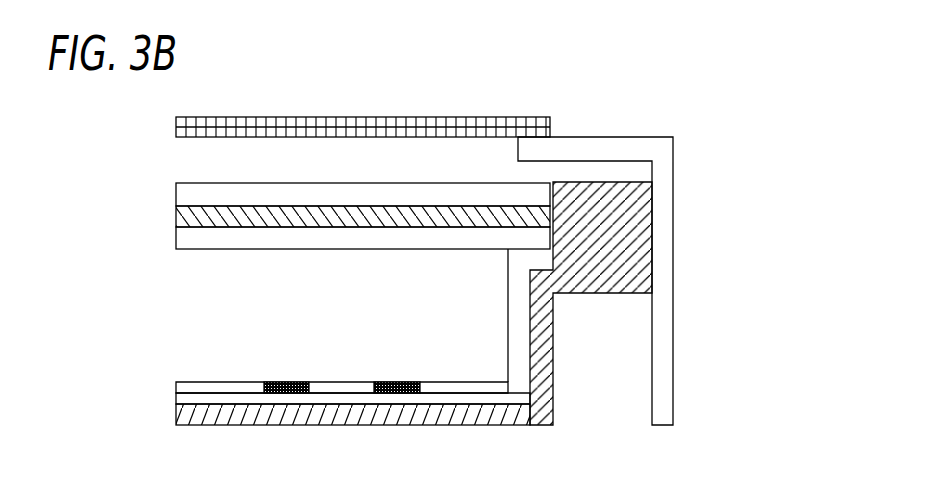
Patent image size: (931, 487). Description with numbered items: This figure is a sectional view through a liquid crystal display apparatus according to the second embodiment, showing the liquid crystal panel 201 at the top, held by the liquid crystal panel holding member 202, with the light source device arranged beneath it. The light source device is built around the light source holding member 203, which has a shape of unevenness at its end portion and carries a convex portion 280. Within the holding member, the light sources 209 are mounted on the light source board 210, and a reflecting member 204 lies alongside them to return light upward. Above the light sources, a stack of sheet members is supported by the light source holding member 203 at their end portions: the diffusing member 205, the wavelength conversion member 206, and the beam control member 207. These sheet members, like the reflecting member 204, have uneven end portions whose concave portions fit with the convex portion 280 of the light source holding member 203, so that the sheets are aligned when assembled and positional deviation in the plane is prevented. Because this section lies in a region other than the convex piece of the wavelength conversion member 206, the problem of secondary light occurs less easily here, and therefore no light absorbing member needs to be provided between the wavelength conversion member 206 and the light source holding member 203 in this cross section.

The liquid crystal panel 201 is at (176, 122).
The liquid crystal panel holding member 202 is at (662, 405).
The light source holding member 203 is at (185, 414).
The reflecting member 204 is at (192, 382).
The diffusing member 205 is at (180, 240).
The wavelength conversion member 206 is at (176, 212).
The beam control member 207 is at (176, 187).
The light source 209 is at (397, 382).
The light source board 210 is at (176, 400).
The convex portion 280 is at (636, 200).